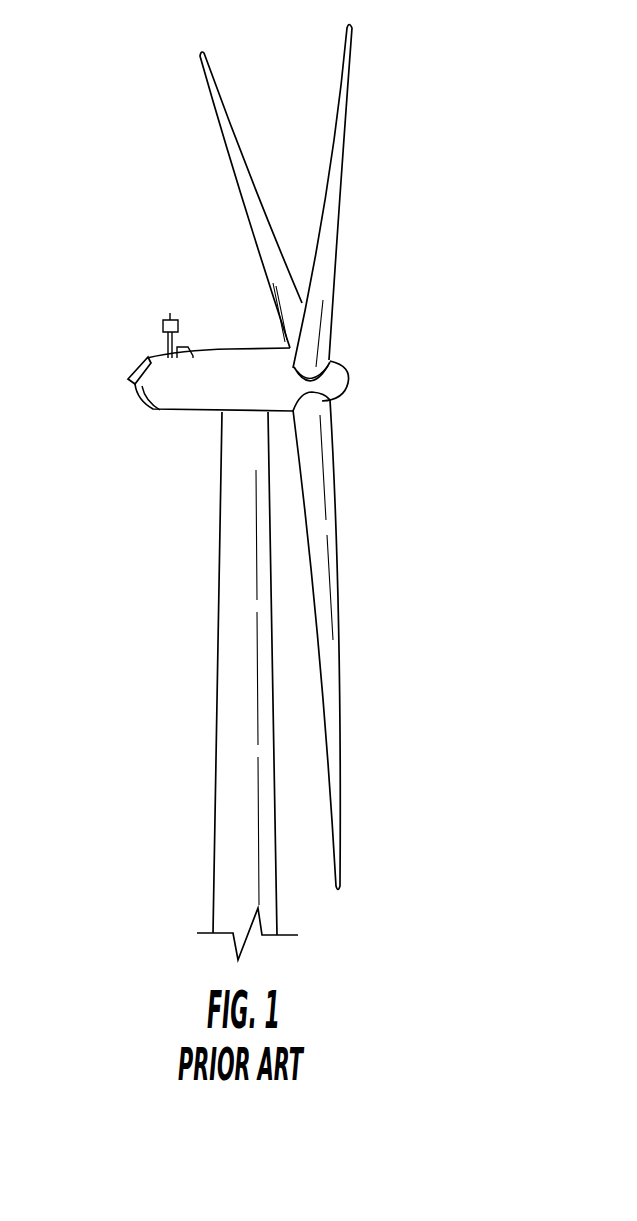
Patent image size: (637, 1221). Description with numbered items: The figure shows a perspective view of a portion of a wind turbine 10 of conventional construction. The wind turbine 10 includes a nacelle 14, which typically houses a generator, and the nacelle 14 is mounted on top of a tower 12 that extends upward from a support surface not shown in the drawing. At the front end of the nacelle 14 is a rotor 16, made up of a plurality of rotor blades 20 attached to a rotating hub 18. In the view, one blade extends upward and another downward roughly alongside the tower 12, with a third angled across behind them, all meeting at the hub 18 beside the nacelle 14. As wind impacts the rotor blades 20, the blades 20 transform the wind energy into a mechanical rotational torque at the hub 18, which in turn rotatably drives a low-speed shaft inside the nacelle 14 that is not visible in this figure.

The wind turbine 10 is at (98, 138).
The tower 12 is at (220, 730).
The nacelle 14 is at (183, 433).
The rotor 16 is at (447, 277).
The rotating hub 18 is at (348, 388).
The rotor blades 20 is at (258, 177).